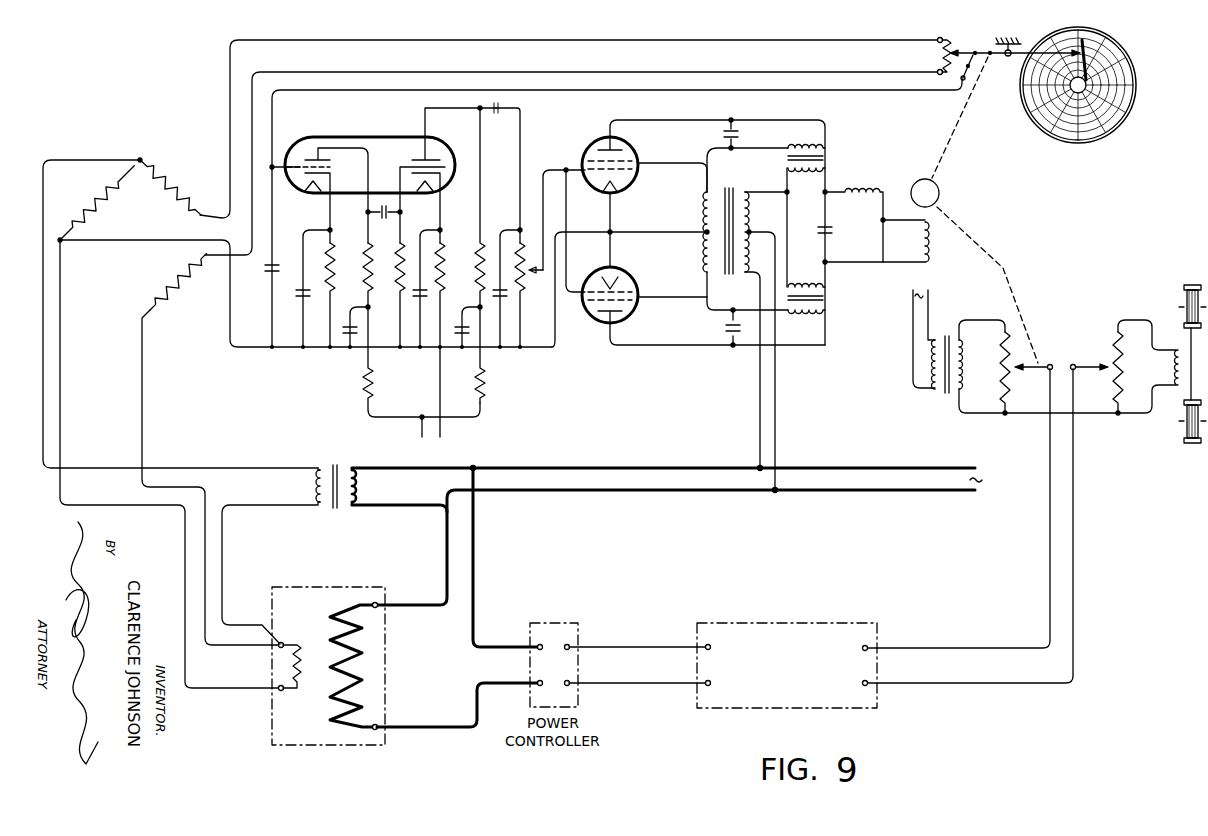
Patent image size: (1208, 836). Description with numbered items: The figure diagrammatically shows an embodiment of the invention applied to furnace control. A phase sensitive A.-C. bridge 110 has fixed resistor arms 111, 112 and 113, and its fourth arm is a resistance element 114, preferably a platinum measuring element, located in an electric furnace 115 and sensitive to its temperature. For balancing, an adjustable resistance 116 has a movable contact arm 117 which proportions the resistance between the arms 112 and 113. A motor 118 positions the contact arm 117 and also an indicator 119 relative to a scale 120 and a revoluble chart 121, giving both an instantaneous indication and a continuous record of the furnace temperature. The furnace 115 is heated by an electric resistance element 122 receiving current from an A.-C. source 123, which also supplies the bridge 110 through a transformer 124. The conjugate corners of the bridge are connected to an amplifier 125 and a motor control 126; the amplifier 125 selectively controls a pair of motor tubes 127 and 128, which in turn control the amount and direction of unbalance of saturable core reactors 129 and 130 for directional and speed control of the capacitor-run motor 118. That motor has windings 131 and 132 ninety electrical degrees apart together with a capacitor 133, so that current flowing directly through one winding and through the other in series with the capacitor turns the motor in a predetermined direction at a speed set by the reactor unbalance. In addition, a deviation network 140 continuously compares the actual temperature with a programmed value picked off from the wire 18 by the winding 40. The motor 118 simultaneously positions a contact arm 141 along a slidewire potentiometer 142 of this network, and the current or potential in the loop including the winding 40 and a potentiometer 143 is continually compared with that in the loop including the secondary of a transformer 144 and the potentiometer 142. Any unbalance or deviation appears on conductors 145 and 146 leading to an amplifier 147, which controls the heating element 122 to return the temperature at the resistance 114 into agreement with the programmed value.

The phase sensitive A.-C. bridge 110 is at (297, 423).
The fixed resistor arm 111 is at (153, 232).
The fixed resistor arm 112 is at (537, 129).
The fixed resistor arm 113 is at (539, 358).
The resistance element 114 is at (301, 688).
The electric furnace 115 is at (328, 673).
The adjustable resistance 116 is at (928, 56).
The movable contact arm 117 is at (965, 50).
The motor 118 is at (978, 202).
The indicator 119 is at (1012, 58).
The scale 120 is at (1086, 85).
The revoluble chart 121 is at (1100, 128).
The electric resistance heating element 122 is at (332, 655).
The A.-C. source 123 is at (565, 470).
The transformer 124 is at (289, 547).
The amplifier 125 is at (487, 276).
The motor control 126 is at (795, 297).
The motor tube 127 is at (607, 325).
The motor tube 128 is at (595, 142).
The saturable core reactor 129 is at (826, 299).
The saturable core reactor 130 is at (822, 158).
The motor winding 131 is at (853, 217).
The motor winding 132 is at (892, 241).
The capacitor 133 is at (841, 233).
The deviation network 140 is at (1067, 366).
The contact arm 141 is at (1040, 372).
The slidewire potentiometer 142 is at (1000, 341).
The potentiometer 143 is at (1108, 337).
The transformer 144 is at (938, 352).
The conductor 145 is at (1048, 545).
The conductor 146 is at (1076, 545).
The amplifier 147 is at (787, 665).
The wire 18 is at (1186, 342).
The winding 40 is at (1167, 367).